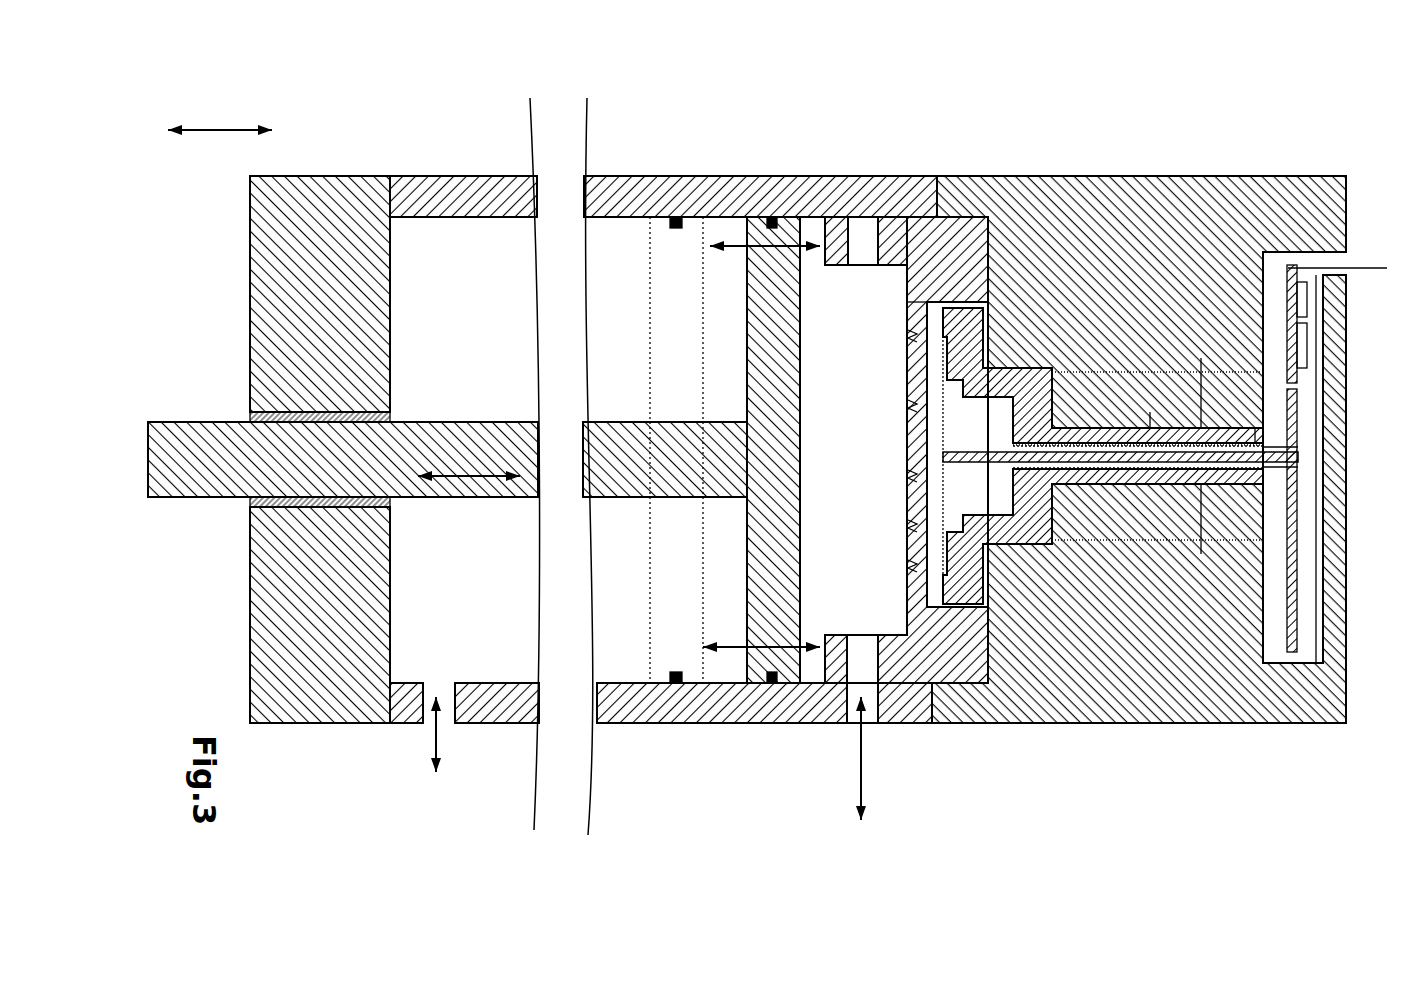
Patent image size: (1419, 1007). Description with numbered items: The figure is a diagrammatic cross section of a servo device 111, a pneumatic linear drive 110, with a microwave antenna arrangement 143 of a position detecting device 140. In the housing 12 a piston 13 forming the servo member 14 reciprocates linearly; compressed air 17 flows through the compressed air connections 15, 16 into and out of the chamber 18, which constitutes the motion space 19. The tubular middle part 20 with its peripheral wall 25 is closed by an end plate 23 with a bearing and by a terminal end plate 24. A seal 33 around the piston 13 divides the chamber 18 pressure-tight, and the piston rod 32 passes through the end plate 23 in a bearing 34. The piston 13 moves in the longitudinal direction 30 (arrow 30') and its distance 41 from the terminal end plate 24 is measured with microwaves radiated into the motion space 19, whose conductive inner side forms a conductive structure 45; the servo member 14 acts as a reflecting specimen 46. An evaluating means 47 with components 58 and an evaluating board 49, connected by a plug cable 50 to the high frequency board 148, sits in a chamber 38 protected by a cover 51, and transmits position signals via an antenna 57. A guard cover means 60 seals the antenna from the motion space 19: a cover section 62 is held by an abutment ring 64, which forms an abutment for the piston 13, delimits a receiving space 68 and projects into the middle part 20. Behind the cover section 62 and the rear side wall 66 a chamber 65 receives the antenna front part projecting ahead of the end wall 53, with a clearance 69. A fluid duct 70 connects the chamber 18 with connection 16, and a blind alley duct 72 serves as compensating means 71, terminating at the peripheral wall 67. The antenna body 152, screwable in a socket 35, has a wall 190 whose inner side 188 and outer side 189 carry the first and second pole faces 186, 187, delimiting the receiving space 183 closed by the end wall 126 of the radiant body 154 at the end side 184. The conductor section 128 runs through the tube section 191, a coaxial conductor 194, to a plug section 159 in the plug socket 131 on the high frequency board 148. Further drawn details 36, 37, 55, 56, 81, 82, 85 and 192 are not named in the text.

The housing 12 is at (778, 176).
The piston 13 is at (700, 723).
The servo member 14 is at (745, 725).
The compressed air connection 15 is at (446, 725).
The compressed air connection 16 is at (875, 670).
The compressed air 17 is at (436, 730).
The chamber 18 is at (430, 247).
The motion space 19 is at (672, 618).
The middle part 20 is at (630, 190).
The end plate 23 is at (355, 176).
The terminal end plate 24 is at (1185, 176).
The peripheral wall 25 is at (640, 725).
The longitudinal direction 30 is at (220, 165).
The arrow 30' is at (469, 512).
The piston rod 32 is at (625, 440).
The seal 33 is at (782, 725).
The bearing 34 is at (250, 413).
The socket 35 is at (1040, 525).
The circuit board 36 is at (1290, 498).
The bore 37 is at (1213, 458).
The chamber 38 is at (1307, 648).
The distance 41 is at (726, 262).
The conductive structure 45 is at (714, 190).
The specimen 46 is at (783, 337).
The evaluating means 47 is at (1280, 340).
The evaluating board 49 is at (1250, 188).
The plug cable 50 is at (1300, 398).
The cover 51 is at (1336, 636).
The end wall 53 is at (1120, 725).
The spring element 55 is at (928, 510).
The chamber wall 56 is at (620, 218).
The antenna 57 is at (1387, 268).
The components 58 is at (1307, 302).
The guard cover means 60 is at (912, 237).
The cover section 62 is at (908, 372).
The abutment ring 64 is at (837, 640).
The chamber 65 is at (932, 302).
The rear side wall 66 is at (978, 725).
The peripheral wall 67 is at (995, 190).
The receiving space 68 is at (887, 454).
The clearance 69 is at (1000, 617).
The fluid duct 70 is at (893, 728).
The compensating means 71 is at (833, 188).
The blind alley duct 72 is at (890, 190).
The pressure sleeve 81 is at (983, 325).
The sensor piston 82 is at (1067, 410).
The seal 85 is at (1060, 392).
The pneumatic linear drive 110 is at (1180, 138).
The servo device 111 is at (1285, 138).
The end wall 126 is at (927, 468).
The conductor section 128 is at (1187, 475).
The plug socket 131 is at (1297, 463).
The position detecting device 140 is at (1252, 643).
The microwave antenna arrangement 143 is at (1095, 310).
The high frequency board 148 is at (1290, 545).
The antenna body 152 is at (1000, 535).
The radiant body 154 is at (917, 550).
The plug section 159 is at (1300, 430).
The receiving space 183 is at (1040, 505).
The end side 184 is at (908, 330).
The first pole face 186 is at (927, 410).
The second pole face 187 is at (1045, 540).
The inner side 188 is at (1013, 435).
The outer side 189 is at (1035, 375).
The wall 190 is at (1057, 483).
The tube section 191 is at (1160, 425).
The seal 192 is at (1268, 438).
The coaxial conductor 194 is at (1196, 339).